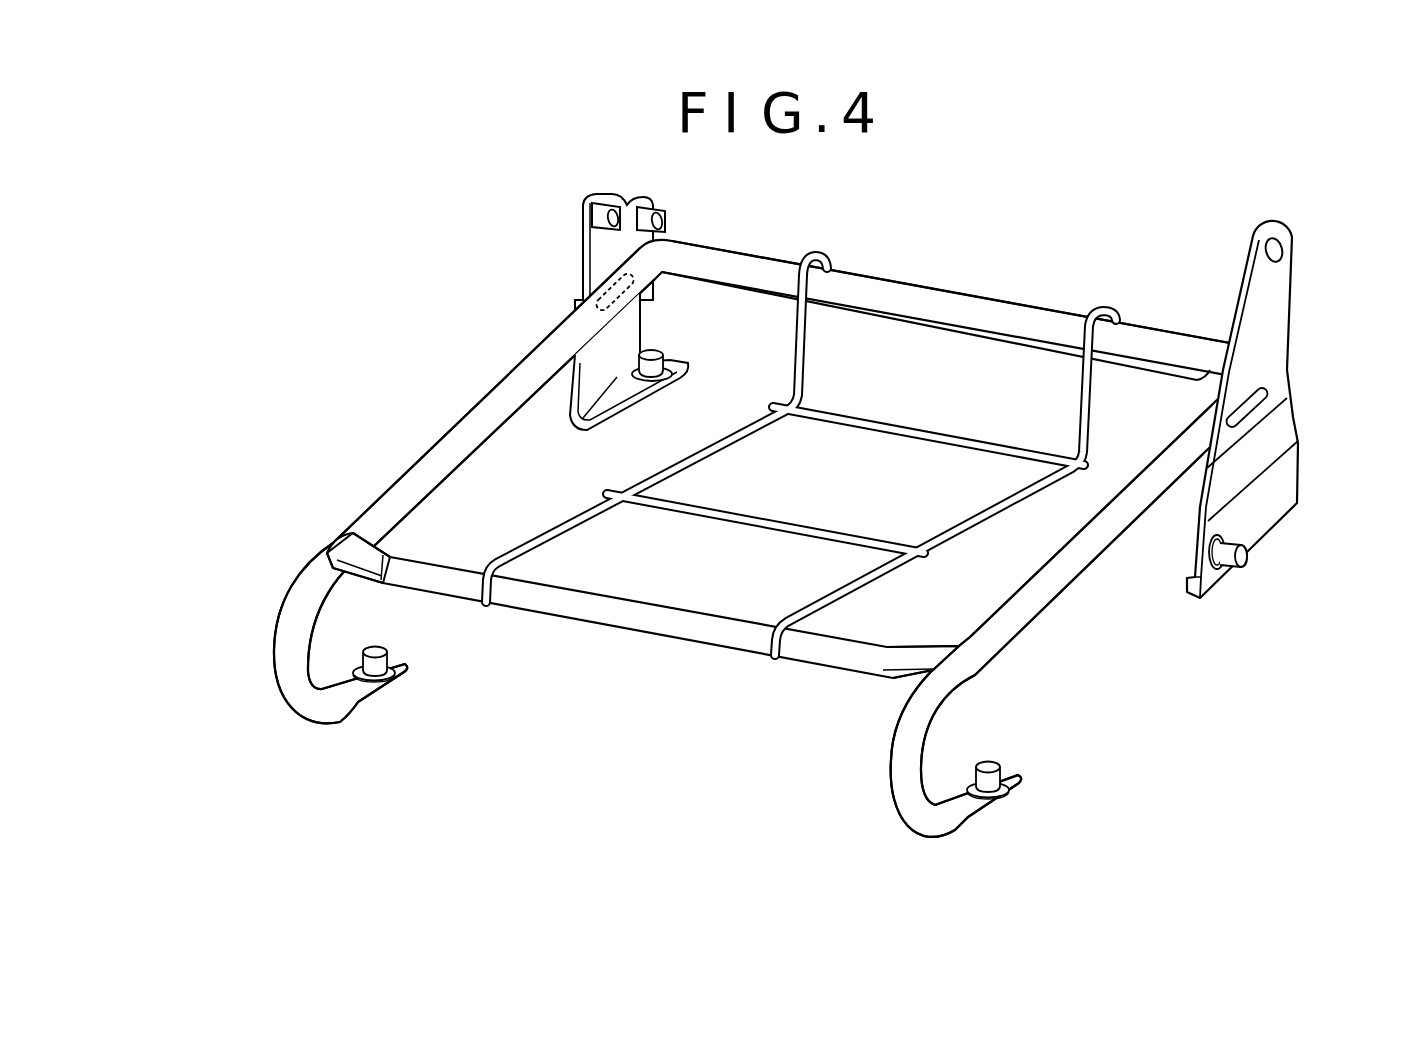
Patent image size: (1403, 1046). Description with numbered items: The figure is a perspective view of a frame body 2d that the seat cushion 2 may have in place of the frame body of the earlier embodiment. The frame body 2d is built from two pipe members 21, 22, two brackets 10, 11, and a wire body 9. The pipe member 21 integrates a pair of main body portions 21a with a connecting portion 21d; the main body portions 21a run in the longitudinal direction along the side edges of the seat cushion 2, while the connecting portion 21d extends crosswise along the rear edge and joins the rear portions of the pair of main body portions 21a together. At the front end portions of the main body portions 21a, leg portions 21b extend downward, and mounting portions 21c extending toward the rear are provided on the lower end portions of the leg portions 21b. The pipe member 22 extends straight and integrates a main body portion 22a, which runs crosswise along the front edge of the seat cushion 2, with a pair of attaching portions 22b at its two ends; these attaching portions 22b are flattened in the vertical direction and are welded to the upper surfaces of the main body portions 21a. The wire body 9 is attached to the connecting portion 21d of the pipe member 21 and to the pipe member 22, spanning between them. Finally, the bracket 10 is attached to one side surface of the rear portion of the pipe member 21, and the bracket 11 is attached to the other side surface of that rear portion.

The seat cushion 2 is at (772, 533).
The frame body 2d is at (772, 533).
The wire body 9 is at (580, 513).
The bracket 10 is at (582, 250).
The bracket 11 is at (1295, 337).
The pipe member 21 is at (428, 442).
The main body portions 21a is at (493, 400).
The leg portions 21b is at (288, 665).
The mounting portions 21c is at (345, 690).
The connecting portion 21d is at (920, 300).
The pipe member 22 is at (631, 580).
The main body portion 22a is at (667, 623).
The attaching portions 22b is at (353, 547).